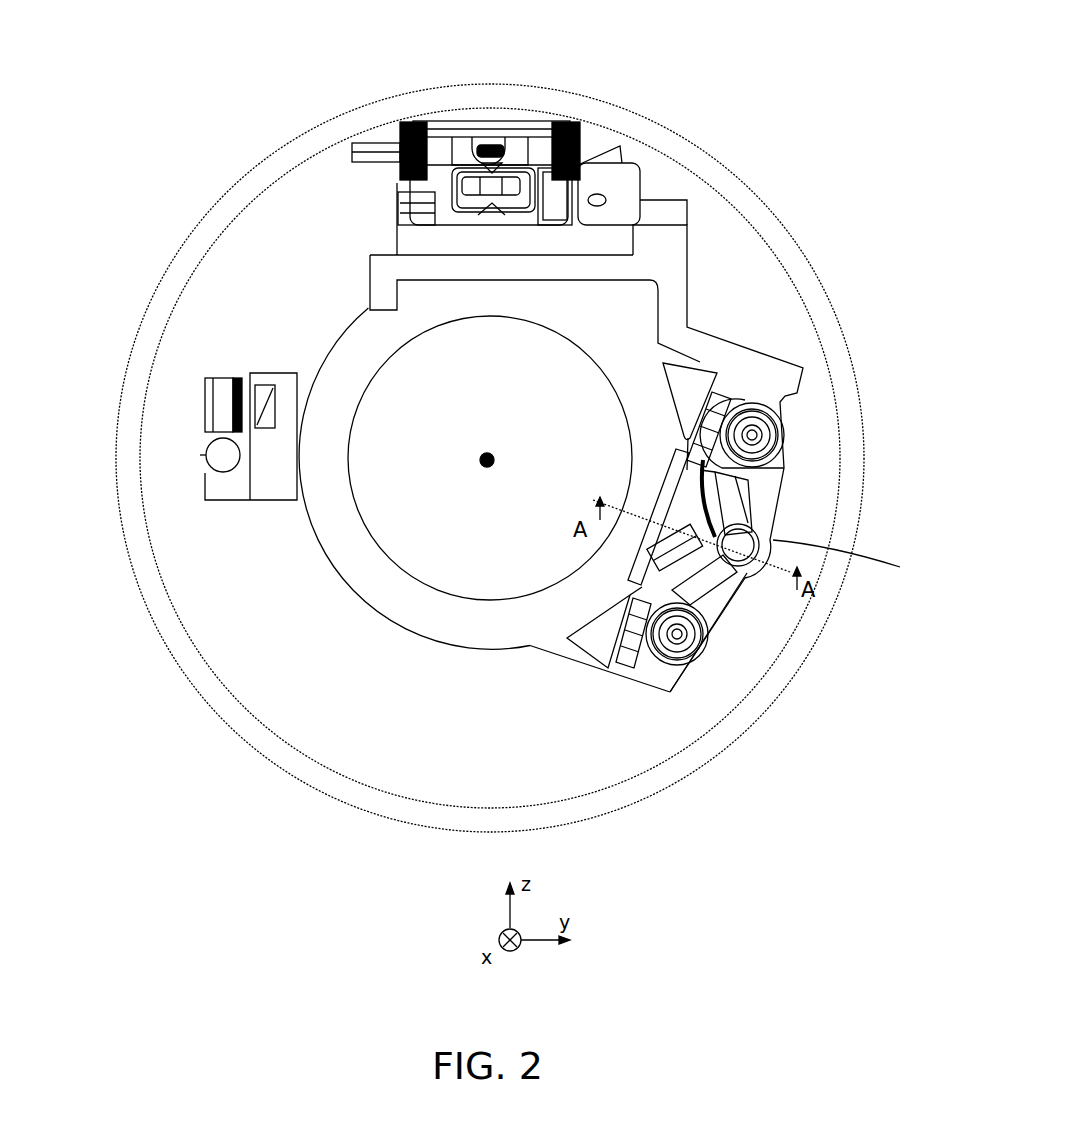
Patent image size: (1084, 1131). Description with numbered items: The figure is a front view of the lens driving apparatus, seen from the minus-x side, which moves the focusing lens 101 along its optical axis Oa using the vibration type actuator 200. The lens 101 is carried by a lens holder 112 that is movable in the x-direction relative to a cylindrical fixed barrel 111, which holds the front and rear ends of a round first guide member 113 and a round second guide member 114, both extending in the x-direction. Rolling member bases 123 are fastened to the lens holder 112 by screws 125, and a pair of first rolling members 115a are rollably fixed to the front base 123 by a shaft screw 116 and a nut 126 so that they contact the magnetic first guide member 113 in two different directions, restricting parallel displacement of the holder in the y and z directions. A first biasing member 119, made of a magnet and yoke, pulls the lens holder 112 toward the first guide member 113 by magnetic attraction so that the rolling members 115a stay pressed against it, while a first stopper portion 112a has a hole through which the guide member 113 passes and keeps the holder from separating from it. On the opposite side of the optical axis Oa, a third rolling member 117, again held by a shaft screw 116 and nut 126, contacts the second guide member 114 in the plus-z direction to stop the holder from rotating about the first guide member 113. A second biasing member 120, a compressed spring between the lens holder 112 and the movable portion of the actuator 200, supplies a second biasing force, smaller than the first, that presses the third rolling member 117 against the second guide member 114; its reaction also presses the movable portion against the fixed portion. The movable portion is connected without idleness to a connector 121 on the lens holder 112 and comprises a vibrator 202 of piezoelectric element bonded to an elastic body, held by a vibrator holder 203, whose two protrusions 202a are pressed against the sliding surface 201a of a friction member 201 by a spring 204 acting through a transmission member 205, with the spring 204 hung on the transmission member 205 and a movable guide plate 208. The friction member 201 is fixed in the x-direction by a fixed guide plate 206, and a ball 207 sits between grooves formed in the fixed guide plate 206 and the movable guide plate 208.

The fixed barrel 111 is at (775, 217).
The lens holder 112 is at (355, 360).
The focusing lens 101 is at (385, 370).
The optical axis Oa is at (487, 462).
The second biasing member 120 is at (396, 238).
The connector 121 is at (672, 197).
The vibration type actuator 200 is at (470, 121).
The friction member 201 is at (425, 135).
The sliding surface 201a is at (430, 130).
The transmission member 205 is at (418, 125).
The vibrator holder 203 is at (560, 122).
The vibrator 202 is at (552, 137).
The protrusions 202a is at (503, 172).
The spring 204 is at (405, 165).
The fixed guide plate 206 is at (400, 198).
The ball 207 is at (400, 206).
The movable guide plate 208 is at (400, 215).
The first stopper portion 112a is at (215, 475).
The shaft screw 116 is at (205, 405).
The third rolling member 117 is at (240, 400).
The second guide member 114 is at (210, 450).
The nut 126 is at (215, 395).
The screws 125 is at (785, 415).
The first guide member 113 is at (785, 560).
The first biasing member 119 is at (760, 582).
The first rolling members 115a is at (772, 512).
The rolling member bases 123 is at (640, 600).